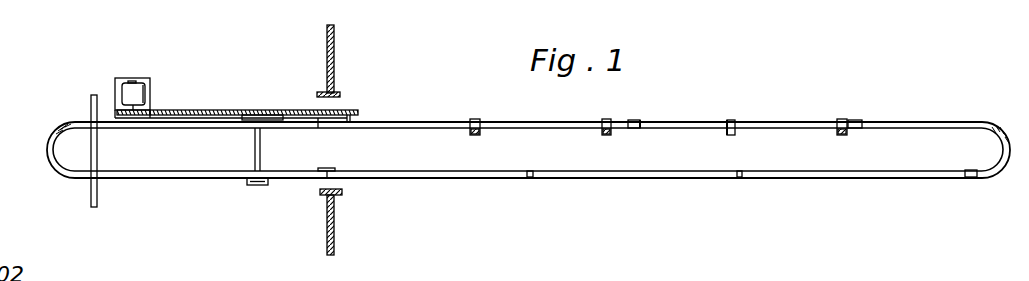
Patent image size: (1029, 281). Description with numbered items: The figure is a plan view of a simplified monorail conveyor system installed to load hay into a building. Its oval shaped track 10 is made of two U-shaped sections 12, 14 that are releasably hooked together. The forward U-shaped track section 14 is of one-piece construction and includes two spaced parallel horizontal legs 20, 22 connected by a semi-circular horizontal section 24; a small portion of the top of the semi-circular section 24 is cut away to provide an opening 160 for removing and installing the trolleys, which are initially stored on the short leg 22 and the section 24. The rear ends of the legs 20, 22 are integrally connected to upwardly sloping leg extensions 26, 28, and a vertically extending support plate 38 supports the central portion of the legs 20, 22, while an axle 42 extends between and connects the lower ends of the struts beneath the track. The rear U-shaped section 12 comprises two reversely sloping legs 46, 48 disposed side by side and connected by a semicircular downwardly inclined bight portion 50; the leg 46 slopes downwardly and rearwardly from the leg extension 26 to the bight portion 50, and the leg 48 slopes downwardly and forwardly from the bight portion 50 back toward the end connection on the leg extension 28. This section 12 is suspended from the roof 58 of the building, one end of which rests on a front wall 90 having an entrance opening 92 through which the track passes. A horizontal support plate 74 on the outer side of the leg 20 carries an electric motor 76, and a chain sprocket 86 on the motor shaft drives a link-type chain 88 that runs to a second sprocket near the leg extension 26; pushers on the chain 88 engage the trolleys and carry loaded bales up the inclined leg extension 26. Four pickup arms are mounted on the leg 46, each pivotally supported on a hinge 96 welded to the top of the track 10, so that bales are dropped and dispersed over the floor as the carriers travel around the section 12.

The track 10 is at (920, 116).
The U-shaped section 12 is at (512, 120).
The forward U-shaped track section 14 is at (213, 177).
The leg 20 is at (114, 124).
The leg 22 is at (124, 176).
The semi-circular horizontal section 24 is at (46, 149).
The leg extension 26 is at (188, 127).
The leg extension 28 is at (230, 181).
The support plate 38 is at (92, 193).
The axle 42 is at (257, 154).
The leg 46 is at (670, 99).
The leg 48 is at (668, 178).
The bight portion 50 is at (1000, 122).
The roof 58 is at (905, 280).
The support plate 74 is at (144, 82).
The electric motor 76 is at (146, 97).
The chain sprocket 86 is at (117, 110).
The chain 88 is at (217, 110).
The front wall 90 is at (333, 78).
The entrance opening 92 is at (344, 111).
The hinge 96 is at (473, 120).
The opening 160 is at (57, 130).